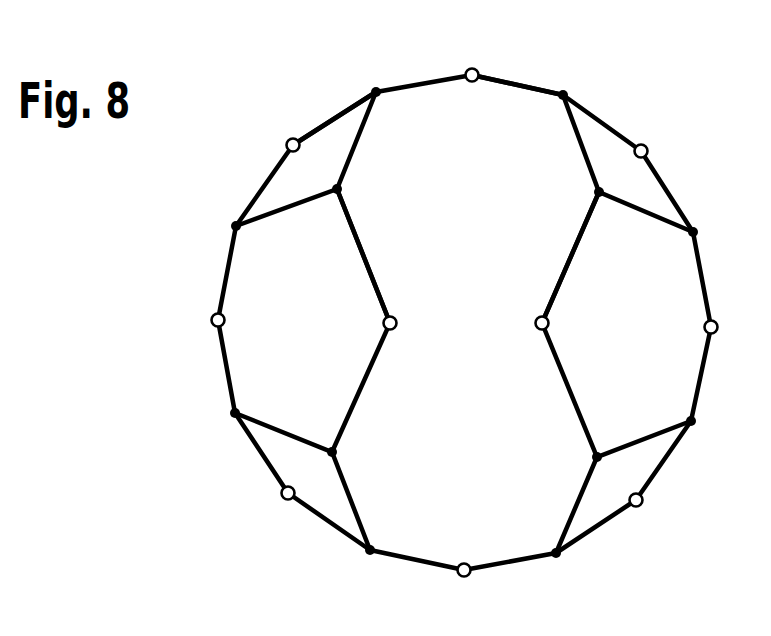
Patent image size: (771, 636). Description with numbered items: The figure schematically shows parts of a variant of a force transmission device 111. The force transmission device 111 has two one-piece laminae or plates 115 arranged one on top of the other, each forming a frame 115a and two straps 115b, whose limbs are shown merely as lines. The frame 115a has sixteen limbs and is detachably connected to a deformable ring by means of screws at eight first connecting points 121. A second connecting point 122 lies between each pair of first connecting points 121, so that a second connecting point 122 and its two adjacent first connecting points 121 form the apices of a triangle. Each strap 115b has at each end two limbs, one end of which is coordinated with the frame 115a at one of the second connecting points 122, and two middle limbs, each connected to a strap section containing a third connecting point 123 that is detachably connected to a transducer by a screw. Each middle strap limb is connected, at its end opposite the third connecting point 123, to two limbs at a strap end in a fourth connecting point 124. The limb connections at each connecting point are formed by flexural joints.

The force transmission device 111 is at (436, 42).
The lamina 115 is at (333, 119).
The frame 115a is at (538, 87).
The strap 115b is at (570, 253).
The first connecting point 121 is at (284, 149).
The second connecting point 122 is at (231, 228).
The third connecting point 123 is at (537, 327).
The fourth connecting point 124 is at (342, 188).